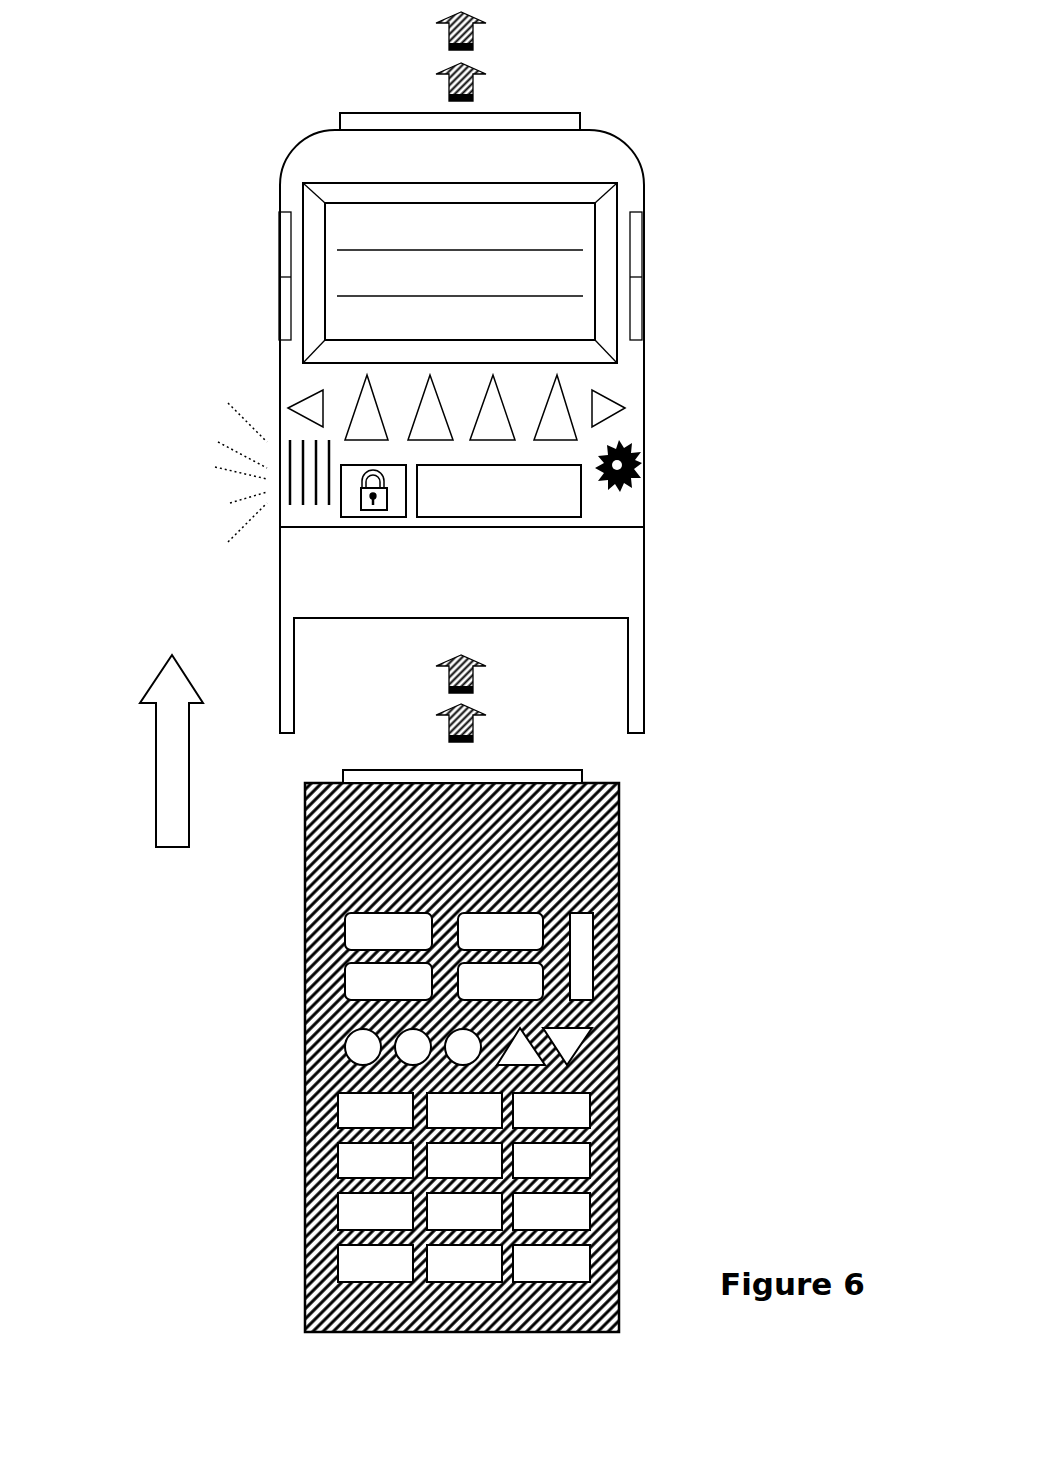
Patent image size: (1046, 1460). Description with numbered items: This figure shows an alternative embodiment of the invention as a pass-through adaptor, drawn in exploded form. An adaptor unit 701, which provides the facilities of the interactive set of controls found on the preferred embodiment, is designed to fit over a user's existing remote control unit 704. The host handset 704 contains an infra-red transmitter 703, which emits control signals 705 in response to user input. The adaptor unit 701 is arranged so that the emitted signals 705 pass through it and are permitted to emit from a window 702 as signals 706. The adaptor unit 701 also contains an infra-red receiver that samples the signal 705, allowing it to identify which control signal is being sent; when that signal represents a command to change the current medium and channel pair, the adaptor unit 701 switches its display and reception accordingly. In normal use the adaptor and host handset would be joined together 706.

The adaptor unit 701 is at (505, 431).
The window 702 is at (529, 142).
The infra-red transmitter 703 is at (559, 767).
The remote control unit 704 is at (559, 1057).
The control signals 705 is at (362, 715).
The signals 706 is at (386, 453).